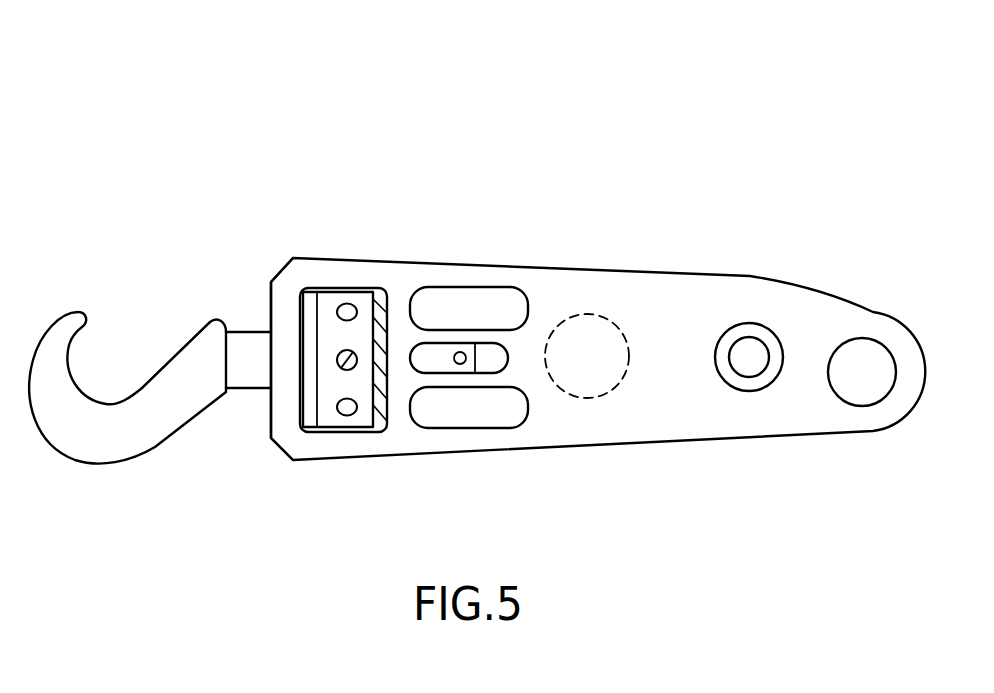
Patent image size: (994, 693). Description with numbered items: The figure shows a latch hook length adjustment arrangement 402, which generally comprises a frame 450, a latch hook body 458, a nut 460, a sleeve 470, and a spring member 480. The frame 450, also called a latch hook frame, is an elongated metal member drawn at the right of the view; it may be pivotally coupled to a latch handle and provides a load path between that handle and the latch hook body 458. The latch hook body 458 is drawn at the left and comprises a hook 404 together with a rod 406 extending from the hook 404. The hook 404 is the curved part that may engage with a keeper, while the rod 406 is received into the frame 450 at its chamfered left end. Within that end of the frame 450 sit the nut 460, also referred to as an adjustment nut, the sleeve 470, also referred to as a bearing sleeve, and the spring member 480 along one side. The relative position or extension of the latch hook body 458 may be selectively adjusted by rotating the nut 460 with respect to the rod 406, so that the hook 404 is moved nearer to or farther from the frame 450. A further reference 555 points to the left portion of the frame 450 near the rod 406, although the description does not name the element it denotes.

The latch hook length adjustment arrangement 402 is at (264, 151).
The hook 404 is at (128, 452).
The latch hook body 458 is at (200, 330).
The rod 406 is at (247, 340).
The frame 450 is at (573, 275).
The arm mounting portion 555 is at (278, 397).
The nut 460 is at (311, 305).
The sleeve 470 is at (352, 297).
The spring member 480 is at (383, 308).